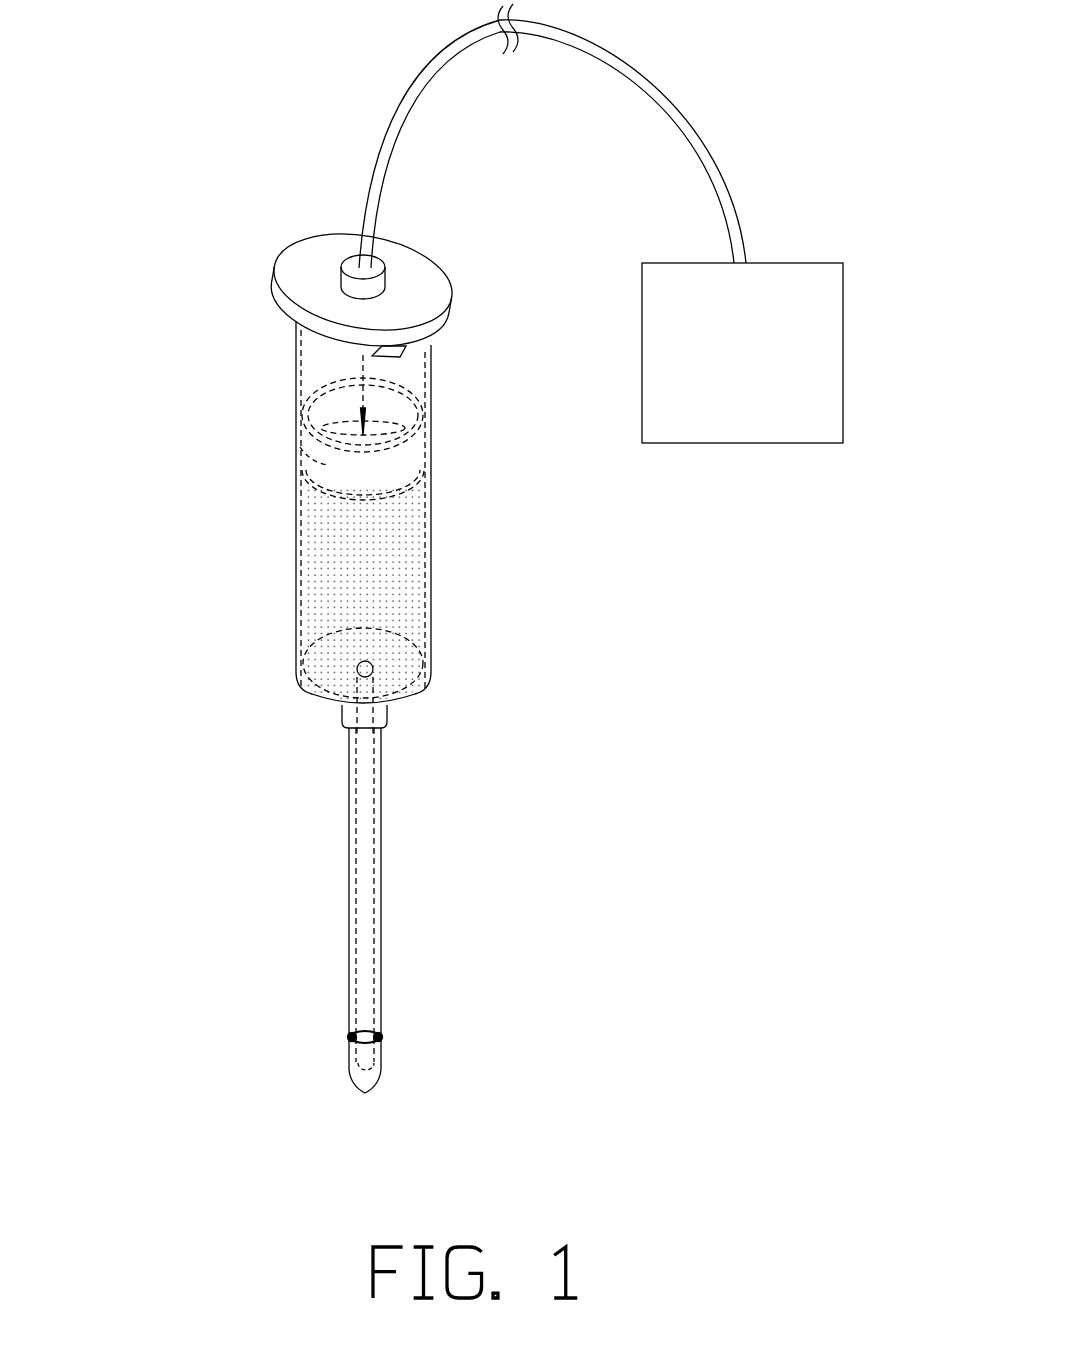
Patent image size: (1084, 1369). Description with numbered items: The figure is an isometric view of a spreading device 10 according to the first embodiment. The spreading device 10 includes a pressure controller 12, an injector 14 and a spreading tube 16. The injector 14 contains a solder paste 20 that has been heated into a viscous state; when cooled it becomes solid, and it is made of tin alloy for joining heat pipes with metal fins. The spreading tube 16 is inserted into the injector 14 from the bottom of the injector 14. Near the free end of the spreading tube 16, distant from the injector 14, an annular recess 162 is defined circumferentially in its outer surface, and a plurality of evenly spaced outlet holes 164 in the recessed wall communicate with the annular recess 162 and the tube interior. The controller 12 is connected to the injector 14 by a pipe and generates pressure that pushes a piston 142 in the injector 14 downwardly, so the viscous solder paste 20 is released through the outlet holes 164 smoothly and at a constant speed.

The spreading device 10 is at (435, 548).
The pressure controller 12 is at (742, 353).
The injector 14 is at (463, 369).
The piston 142 is at (297, 427).
The spreading tube 16 is at (372, 910).
The annular recess 162 is at (435, 1020).
The outlet holes 164 is at (291, 1022).
The solder paste 20 is at (428, 594).